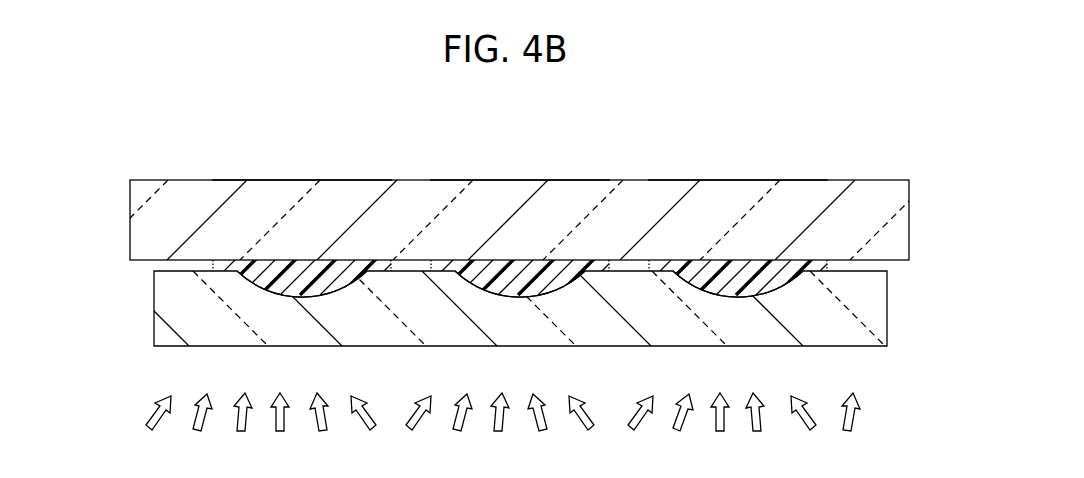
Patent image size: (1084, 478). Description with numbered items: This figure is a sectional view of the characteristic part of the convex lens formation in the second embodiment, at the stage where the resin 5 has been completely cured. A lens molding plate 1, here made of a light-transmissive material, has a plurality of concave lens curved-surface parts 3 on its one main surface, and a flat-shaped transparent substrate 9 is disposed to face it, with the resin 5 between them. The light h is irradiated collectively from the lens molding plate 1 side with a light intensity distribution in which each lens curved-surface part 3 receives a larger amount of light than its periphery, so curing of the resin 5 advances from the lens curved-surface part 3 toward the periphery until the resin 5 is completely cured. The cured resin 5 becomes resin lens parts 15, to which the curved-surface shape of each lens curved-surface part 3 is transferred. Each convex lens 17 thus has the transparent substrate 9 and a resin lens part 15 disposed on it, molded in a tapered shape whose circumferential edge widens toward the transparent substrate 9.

The lens molding plate 1 is at (175, 305).
The lens curved-surface part 3 is at (279, 298).
The resin 5 is at (528, 211).
The transparent substrate 9 is at (192, 186).
The resin lens part 15 is at (250, 276).
The convex lens 17 is at (297, 159).
The light h is at (366, 409).